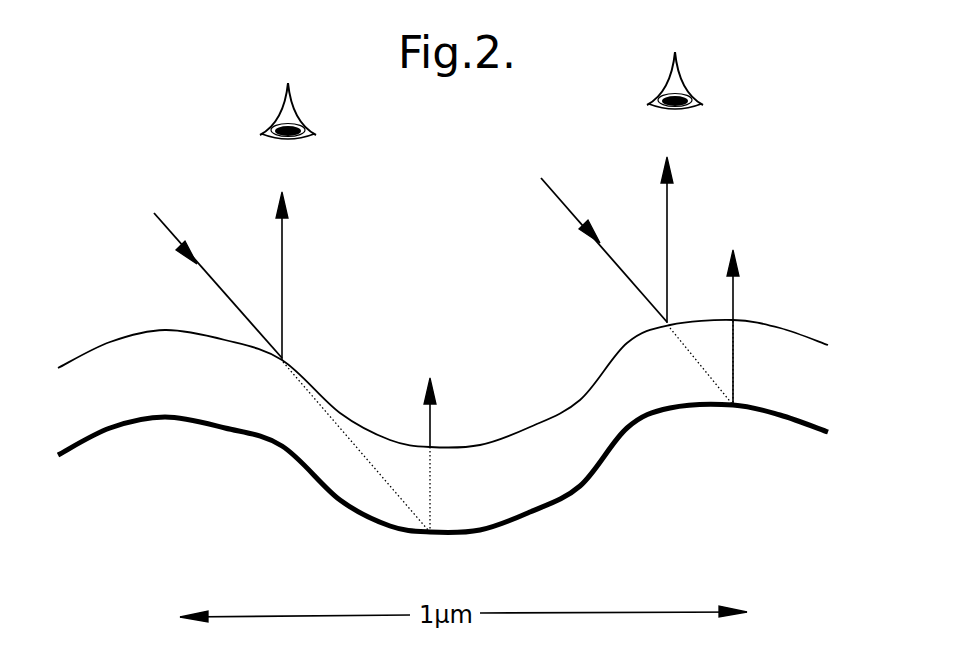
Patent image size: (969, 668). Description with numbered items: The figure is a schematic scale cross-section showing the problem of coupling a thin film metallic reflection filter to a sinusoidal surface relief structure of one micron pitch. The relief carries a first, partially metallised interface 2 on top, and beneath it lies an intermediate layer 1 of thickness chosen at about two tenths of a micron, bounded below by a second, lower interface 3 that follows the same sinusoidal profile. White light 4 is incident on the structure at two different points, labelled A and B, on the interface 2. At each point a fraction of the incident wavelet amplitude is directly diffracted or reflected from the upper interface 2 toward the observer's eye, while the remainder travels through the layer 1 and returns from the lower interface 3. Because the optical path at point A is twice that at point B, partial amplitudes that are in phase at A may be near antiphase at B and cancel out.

The transparent layer 1 is at (814, 386).
The first (partially metallised) interface 2 is at (786, 324).
The reflective lower surface 3 is at (797, 422).
The white light 4 is at (164, 229).